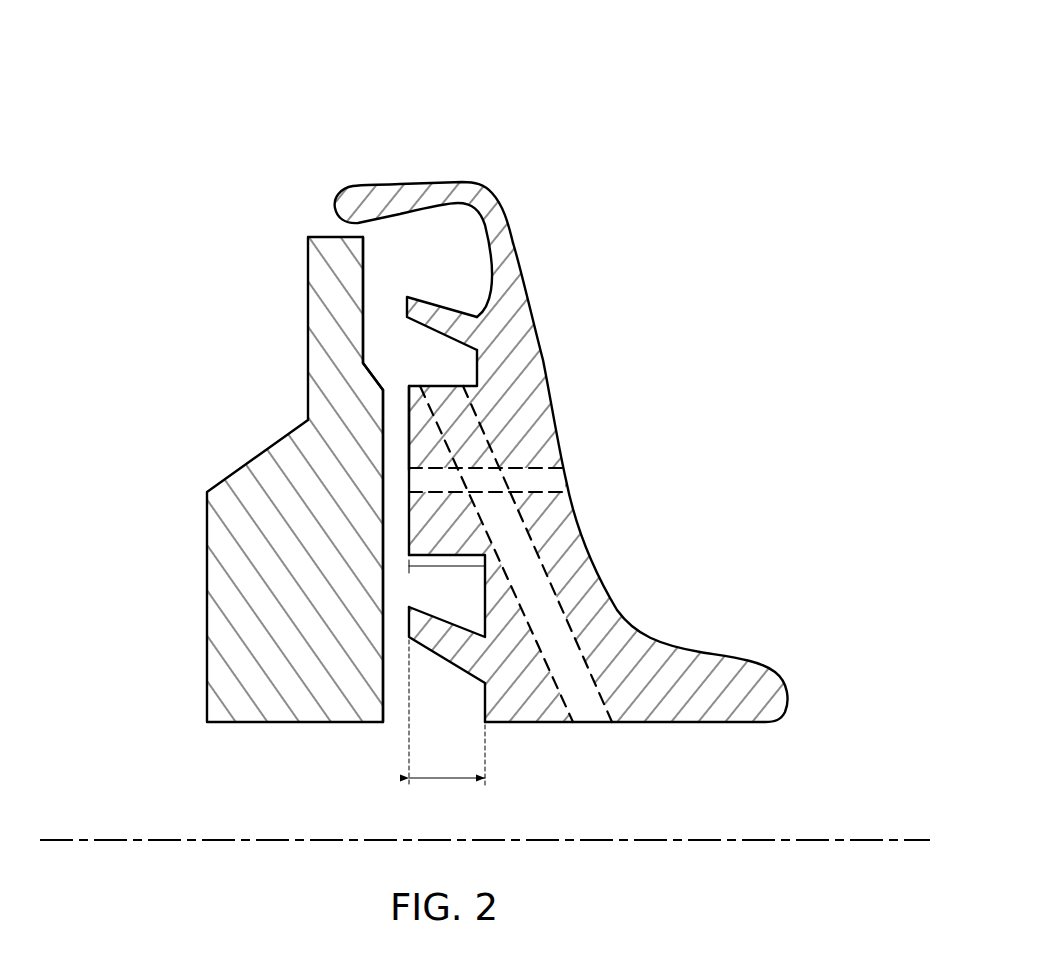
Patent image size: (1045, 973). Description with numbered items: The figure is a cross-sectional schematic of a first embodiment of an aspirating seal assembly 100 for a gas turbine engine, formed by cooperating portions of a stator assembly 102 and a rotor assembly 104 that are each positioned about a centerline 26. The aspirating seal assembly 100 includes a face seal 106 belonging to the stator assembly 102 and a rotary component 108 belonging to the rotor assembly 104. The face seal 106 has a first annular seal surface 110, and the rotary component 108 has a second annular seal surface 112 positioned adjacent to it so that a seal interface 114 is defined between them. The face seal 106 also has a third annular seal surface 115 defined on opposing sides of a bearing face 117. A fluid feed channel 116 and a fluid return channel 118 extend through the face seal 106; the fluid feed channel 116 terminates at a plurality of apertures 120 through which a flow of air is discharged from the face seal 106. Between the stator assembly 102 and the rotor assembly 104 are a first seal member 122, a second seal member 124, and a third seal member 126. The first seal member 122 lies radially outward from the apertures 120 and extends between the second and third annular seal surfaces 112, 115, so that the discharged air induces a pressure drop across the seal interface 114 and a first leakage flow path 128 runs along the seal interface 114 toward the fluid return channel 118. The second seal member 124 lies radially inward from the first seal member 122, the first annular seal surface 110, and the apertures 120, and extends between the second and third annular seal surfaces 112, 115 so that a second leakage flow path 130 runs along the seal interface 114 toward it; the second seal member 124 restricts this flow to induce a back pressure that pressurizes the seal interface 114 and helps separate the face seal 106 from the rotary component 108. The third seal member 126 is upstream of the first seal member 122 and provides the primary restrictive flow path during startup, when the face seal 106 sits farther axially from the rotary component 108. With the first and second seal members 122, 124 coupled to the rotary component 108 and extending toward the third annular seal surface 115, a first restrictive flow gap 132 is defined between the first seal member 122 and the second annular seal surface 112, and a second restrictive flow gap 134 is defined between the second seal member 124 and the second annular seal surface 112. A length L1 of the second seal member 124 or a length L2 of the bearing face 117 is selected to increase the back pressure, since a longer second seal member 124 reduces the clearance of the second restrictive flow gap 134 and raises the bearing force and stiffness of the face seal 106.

The aspirating seal assembly 100 is at (492, 67).
The stator assembly 102 is at (573, 197).
The rotor assembly 104 is at (187, 355).
The face seal 106 is at (592, 560).
The rotary component 108 is at (307, 335).
The first annular seal surface 110 is at (403, 381).
The second annular seal surface 112 is at (388, 705).
The seal interface 114 is at (383, 340).
The third annular seal surface 115 is at (440, 375).
The fluid feed channel 116 is at (540, 460).
The bearing face 117 is at (490, 580).
The fluid return channel 118 is at (585, 640).
The plurality of apertures 120 is at (412, 482).
The first seal member 122 is at (423, 313).
The second seal member 124 is at (460, 670).
The third seal member 126 is at (357, 184).
The first leakage flow path 128 is at (399, 359).
The second leakage flow path 130 is at (440, 599).
The first restrictive flow gap 132 is at (387, 298).
The second restrictive flow gap 134 is at (392, 648).
The centerline 26 is at (843, 840).
The length of second seal member L1 is at (447, 779).
The length of bearing face L2 is at (462, 568).